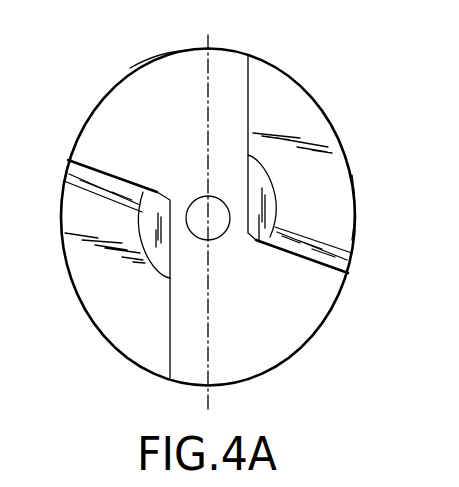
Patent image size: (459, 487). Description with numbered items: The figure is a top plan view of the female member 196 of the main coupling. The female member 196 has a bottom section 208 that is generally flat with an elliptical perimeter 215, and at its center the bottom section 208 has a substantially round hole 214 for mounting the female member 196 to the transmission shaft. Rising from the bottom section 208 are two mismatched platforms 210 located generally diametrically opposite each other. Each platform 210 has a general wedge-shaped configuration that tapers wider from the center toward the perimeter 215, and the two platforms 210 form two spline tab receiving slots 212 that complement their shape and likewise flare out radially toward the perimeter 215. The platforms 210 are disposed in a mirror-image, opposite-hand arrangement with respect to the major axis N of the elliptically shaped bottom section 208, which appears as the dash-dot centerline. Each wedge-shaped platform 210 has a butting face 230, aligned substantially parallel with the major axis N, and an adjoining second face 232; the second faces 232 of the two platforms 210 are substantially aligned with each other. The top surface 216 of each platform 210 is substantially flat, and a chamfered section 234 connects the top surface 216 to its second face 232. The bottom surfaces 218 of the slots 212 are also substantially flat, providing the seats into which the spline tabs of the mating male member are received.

The major axis N is at (207, 37).
The female member 196 is at (100, 100).
The bottom section 208 is at (158, 65).
The platforms 210 is at (317, 128).
The spline tab receiving slots 212 is at (223, 105).
The round hole 214 is at (198, 208).
The elliptical perimeter 215 is at (355, 198).
The top surface 216 is at (335, 211).
The bottom surfaces 218 is at (186, 111).
The butting face 230 is at (243, 82).
The second face 232 is at (320, 272).
The chamfered section 234 is at (343, 262).